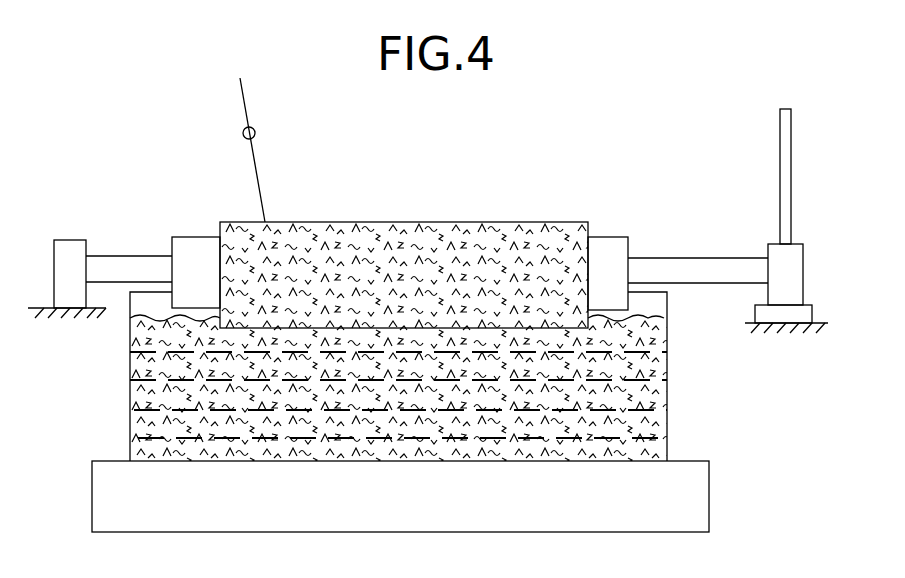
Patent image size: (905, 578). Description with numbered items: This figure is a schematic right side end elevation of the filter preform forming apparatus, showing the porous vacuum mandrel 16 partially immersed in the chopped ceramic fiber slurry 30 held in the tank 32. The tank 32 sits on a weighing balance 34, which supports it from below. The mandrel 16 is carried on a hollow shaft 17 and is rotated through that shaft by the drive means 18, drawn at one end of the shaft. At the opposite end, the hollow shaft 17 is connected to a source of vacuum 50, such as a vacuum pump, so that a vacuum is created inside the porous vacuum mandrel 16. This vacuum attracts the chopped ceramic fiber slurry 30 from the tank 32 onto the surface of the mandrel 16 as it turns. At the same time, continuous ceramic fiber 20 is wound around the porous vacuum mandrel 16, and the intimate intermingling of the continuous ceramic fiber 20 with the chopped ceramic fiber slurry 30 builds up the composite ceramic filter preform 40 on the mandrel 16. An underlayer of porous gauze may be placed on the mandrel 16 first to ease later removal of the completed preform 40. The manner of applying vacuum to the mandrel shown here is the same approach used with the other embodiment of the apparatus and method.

The porous vacuum mandrel 16 is at (618, 245).
The hollow shaft 17 is at (118, 262).
The drive means 18 is at (70, 247).
The continuous ceramic fiber 20 is at (255, 130).
The chopped ceramic fiber slurry 30 is at (662, 318).
The tank 32 is at (667, 380).
The weighing balance 34 is at (710, 505).
The composite ceramic filter preform 40 is at (514, 222).
The source of vacuum 50 is at (780, 187).